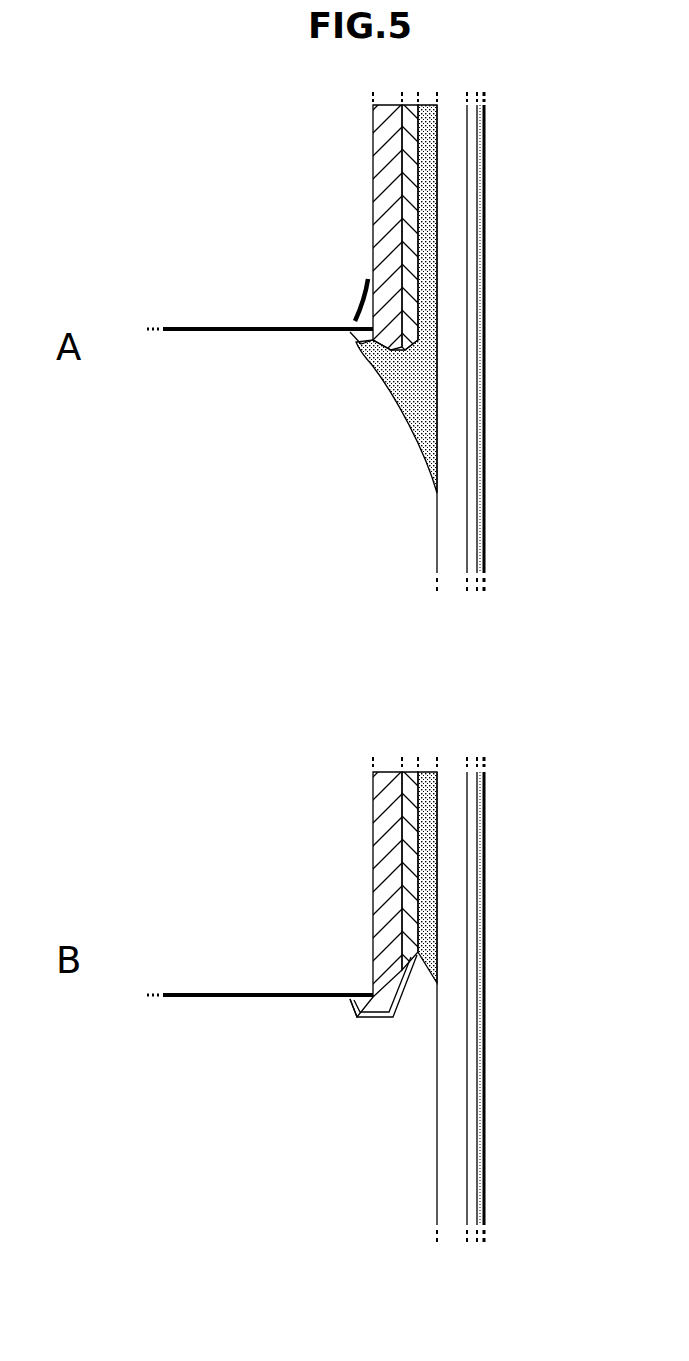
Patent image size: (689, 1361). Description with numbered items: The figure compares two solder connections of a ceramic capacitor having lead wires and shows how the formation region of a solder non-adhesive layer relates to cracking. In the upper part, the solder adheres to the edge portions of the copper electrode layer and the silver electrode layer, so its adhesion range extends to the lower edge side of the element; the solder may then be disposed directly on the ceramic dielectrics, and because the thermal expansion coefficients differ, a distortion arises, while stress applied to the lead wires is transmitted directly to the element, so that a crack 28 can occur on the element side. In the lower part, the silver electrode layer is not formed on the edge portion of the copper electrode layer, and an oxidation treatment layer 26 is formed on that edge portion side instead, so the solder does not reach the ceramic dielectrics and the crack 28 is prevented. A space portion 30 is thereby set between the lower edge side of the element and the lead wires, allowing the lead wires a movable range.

The oxidation treatment layer 26 is at (367, 1021).
The crack 28 is at (360, 317).
The space portion 30 is at (415, 988).